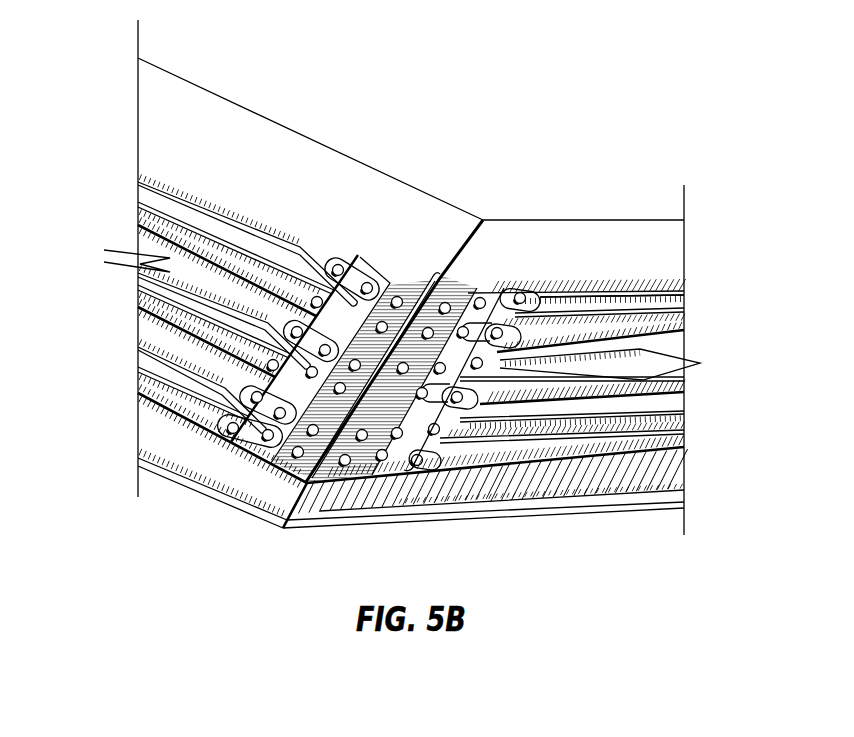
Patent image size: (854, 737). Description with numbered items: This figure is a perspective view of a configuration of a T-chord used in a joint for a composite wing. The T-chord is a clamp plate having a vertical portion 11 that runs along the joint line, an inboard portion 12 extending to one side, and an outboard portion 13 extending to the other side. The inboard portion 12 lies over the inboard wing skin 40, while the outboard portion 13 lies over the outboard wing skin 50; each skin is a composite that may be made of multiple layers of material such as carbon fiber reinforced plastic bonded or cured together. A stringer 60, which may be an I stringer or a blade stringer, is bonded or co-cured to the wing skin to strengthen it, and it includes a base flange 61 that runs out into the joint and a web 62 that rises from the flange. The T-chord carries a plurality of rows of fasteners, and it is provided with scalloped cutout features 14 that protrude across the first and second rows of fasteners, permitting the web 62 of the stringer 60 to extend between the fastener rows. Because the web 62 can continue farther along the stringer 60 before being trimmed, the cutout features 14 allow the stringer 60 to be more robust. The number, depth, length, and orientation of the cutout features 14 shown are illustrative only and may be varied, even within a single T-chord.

The vertical portion 11 is at (434, 278).
The inboard portion 12 is at (498, 298).
The outboard portion 13 is at (375, 278).
The cutout feature 14 is at (357, 287).
The inboard wing skin 40 is at (563, 237).
The outboard wing skin 50 is at (148, 135).
The stringer 60 is at (668, 285).
The base flange 61 is at (510, 457).
The web 62 is at (585, 292).